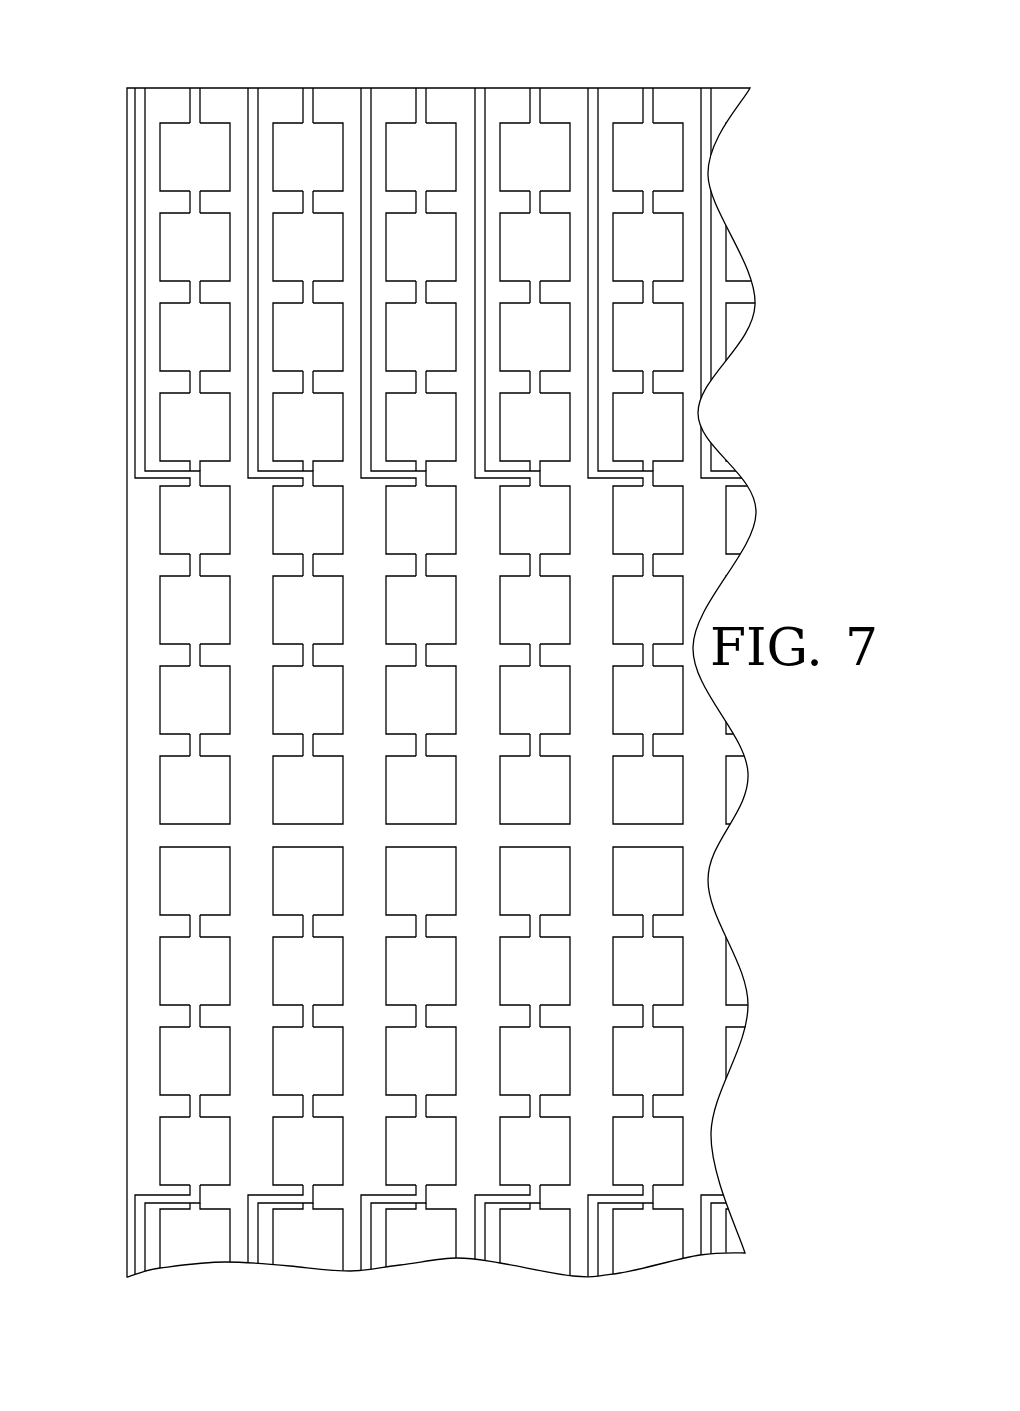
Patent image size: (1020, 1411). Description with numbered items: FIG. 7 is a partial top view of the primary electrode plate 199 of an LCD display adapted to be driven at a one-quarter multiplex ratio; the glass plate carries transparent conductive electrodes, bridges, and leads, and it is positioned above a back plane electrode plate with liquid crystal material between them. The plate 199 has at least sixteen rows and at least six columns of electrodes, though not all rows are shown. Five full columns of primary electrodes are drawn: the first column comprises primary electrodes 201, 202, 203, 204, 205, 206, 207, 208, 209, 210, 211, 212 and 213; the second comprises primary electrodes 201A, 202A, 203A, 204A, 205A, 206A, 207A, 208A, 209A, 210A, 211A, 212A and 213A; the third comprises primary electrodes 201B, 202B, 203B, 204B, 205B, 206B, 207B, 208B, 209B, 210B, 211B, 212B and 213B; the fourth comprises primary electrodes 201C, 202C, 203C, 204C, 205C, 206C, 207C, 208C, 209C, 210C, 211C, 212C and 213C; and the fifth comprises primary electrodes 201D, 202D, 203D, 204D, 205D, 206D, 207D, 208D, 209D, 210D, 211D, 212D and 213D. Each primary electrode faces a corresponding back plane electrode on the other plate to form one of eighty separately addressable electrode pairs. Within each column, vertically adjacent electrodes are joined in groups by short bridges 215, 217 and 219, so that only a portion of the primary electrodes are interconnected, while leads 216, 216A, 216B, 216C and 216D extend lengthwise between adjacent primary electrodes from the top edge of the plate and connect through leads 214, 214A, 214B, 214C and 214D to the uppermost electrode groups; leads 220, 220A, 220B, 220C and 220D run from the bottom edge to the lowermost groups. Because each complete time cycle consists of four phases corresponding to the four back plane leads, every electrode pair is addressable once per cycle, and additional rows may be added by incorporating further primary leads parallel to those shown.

The primary electrode plate 199 is at (127, 150).
The connection line 214 is at (195, 88).
The connection line 214A is at (308, 88).
The connection line 214B is at (421, 88).
The connection line 214C is at (535, 88).
The connection line 214D is at (648, 88).
The lead 216 is at (140, 87).
The lead 216A is at (250, 87).
The lead 216B is at (364, 87).
The lead 216C is at (480, 87).
The lead 216D is at (593, 87).
The connecting portion 215 is at (190, 383).
The connecting portion 217 is at (190, 745).
The connecting portion 219 is at (190, 1106).
The bus line 220 is at (141, 1278).
The bus line 220A is at (255, 1266).
The bus line 220B is at (375, 1272).
The bus line 220C is at (487, 1262).
The bus line 220D is at (602, 1276).
The primary electrode 201 is at (195, 157).
The primary electrode 202 is at (195, 247).
The primary electrode 203 is at (195, 337).
The primary electrode 204 is at (195, 432).
The primary electrode 205 is at (195, 520).
The primary electrode 206 is at (195, 610).
The primary electrode 207 is at (195, 700).
The primary electrode 208 is at (195, 790).
The primary electrode 209 is at (195, 881).
The primary electrode 210 is at (195, 971).
The primary electrode 211 is at (195, 1061).
The primary electrode 212 is at (195, 1151).
The primary electrode 213 is at (195, 1246).
The primary electrode 201A is at (308, 157).
The primary electrode 202A is at (308, 247).
The primary electrode 203A is at (308, 337).
The primary electrode 204A is at (308, 432).
The primary electrode 205A is at (308, 520).
The primary electrode 206A is at (308, 610).
The primary electrode 207A is at (308, 700).
The primary electrode 208A is at (308, 790).
The primary electrode 209A is at (308, 881).
The primary electrode 210A is at (308, 971).
The primary electrode 211A is at (308, 1061).
The primary electrode 212A is at (308, 1151).
The primary electrode 213A is at (308, 1246).
The primary electrode 201B is at (421, 157).
The primary electrode 202B is at (421, 247).
The primary electrode 203B is at (421, 337).
The primary electrode 204B is at (421, 432).
The primary electrode 205B is at (421, 520).
The primary electrode 206B is at (421, 610).
The primary electrode 207B is at (421, 700).
The primary electrode 208B is at (421, 790).
The primary electrode 209B is at (421, 881).
The primary electrode 210B is at (421, 971).
The primary electrode 211B is at (421, 1061).
The primary electrode 212B is at (421, 1151).
The primary electrode 213B is at (421, 1246).
The primary electrode 201C is at (535, 157).
The primary electrode 202C is at (535, 247).
The primary electrode 203C is at (535, 337).
The primary electrode 204C is at (535, 432).
The primary electrode 205C is at (535, 520).
The primary electrode 206C is at (535, 610).
The primary electrode 207C is at (535, 700).
The primary electrode 208C is at (535, 790).
The primary electrode 209C is at (535, 881).
The primary electrode 210C is at (535, 971).
The primary electrode 211C is at (535, 1061).
The primary electrode 212C is at (535, 1151).
The primary electrode 213C is at (535, 1246).
The primary electrode 201D is at (648, 157).
The primary electrode 202D is at (648, 247).
The primary electrode 203D is at (648, 337).
The primary electrode 204D is at (648, 432).
The primary electrode 205D is at (648, 520).
The primary electrode 206D is at (648, 610).
The primary electrode 207D is at (648, 700).
The primary electrode 208D is at (648, 790).
The primary electrode 209D is at (648, 881).
The primary electrode 210D is at (648, 971).
The primary electrode 211D is at (648, 1061).
The primary electrode 212D is at (648, 1151).
The primary electrode 213D is at (648, 1246).